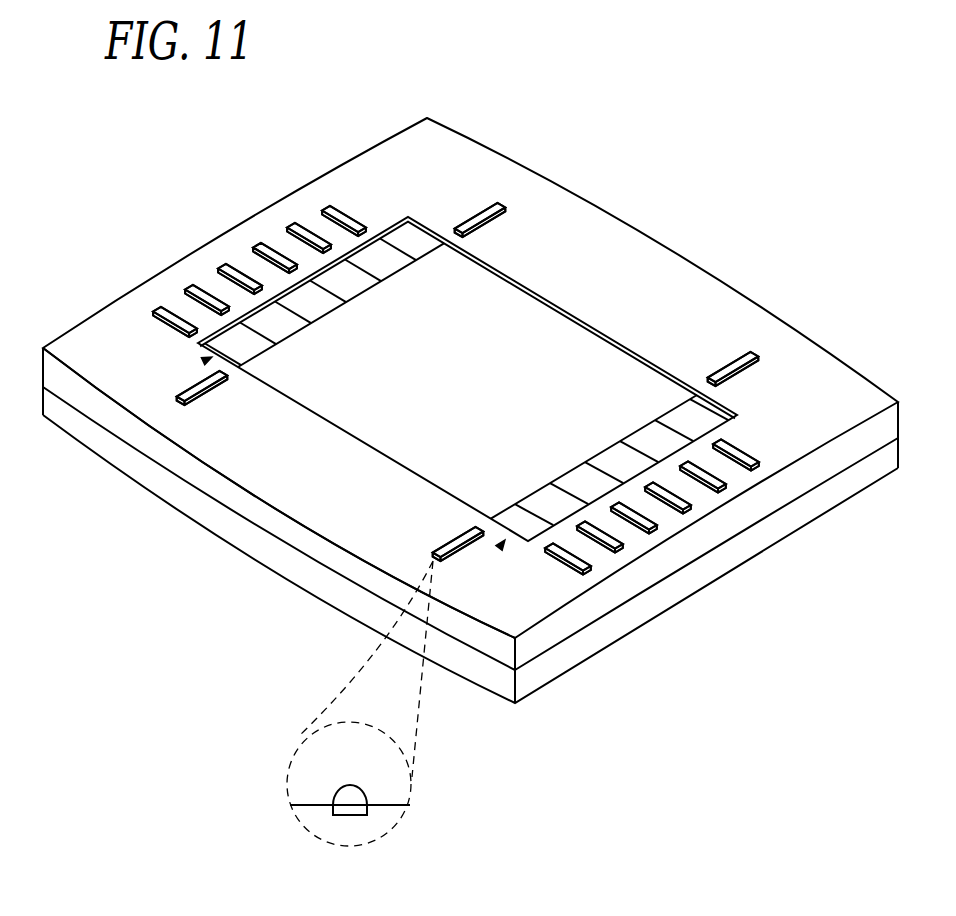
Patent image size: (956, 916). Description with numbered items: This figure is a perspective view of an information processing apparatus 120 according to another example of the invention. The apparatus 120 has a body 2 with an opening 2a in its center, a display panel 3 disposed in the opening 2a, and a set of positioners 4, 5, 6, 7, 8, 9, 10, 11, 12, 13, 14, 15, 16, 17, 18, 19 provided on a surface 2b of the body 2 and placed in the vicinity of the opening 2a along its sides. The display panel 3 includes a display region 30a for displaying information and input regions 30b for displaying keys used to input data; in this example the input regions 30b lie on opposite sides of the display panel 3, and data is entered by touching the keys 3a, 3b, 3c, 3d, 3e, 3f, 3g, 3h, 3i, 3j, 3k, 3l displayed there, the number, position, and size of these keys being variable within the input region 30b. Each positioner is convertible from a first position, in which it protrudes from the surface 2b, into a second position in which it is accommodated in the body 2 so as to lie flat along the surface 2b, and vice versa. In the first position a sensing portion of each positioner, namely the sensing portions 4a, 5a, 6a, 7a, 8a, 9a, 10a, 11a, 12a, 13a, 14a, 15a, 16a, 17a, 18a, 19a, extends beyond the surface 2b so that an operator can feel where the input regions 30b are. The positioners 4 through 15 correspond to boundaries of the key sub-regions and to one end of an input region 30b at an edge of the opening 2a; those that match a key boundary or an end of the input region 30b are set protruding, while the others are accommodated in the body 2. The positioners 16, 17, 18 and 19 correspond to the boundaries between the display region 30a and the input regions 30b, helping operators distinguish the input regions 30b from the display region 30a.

The body 2 is at (668, 260).
The opening 2a is at (543, 323).
The surface 2b is at (717, 297).
The display panel 3 is at (587, 323).
The key 3a is at (686, 403).
The key 3b is at (652, 425).
The key 3c is at (618, 444).
The key 3d is at (585, 466).
The key 3e is at (550, 486).
The key 3f is at (518, 508).
The key 3g is at (422, 250).
The key 3h is at (388, 270).
The key 3i is at (357, 297).
The key 3j is at (330, 313).
The key 3k is at (295, 332).
The key 3l is at (250, 353).
The positioner 4 is at (760, 465).
The sensing portion 4a is at (743, 452).
The positioner 5 is at (725, 489).
The sensing portion 5a is at (707, 489).
The positioner 6 is at (690, 510).
The sensing portion 6a is at (672, 510).
The positioner 7 is at (656, 530).
The sensing portion 7a is at (638, 530).
The positioner 8 is at (622, 550).
The sensing portion 8a is at (604, 549).
The positioner 9 is at (586, 572).
The sensing portion 9a is at (563, 567).
The positioner 10 is at (327, 206).
The sensing portion 10a is at (356, 219).
The positioner 11 is at (294, 221).
The sensing portion 11a is at (311, 230).
The positioner 12 is at (258, 242).
The sensing portion 12a is at (277, 243).
The positioner 13 is at (223, 264).
The sensing portion 13a is at (243, 272).
The positioner 14 is at (191, 285).
The sensing portion 14a is at (210, 293).
The positioner 15 is at (160, 307).
The sensing portion 15a is at (168, 327).
The positioner 16 is at (760, 352).
The sensing portion 16a is at (728, 365).
The positioner 17 is at (506, 201).
The sensing portion 17a is at (490, 219).
The positioner 18 is at (432, 553).
The sensing portion 18a is at (458, 536).
The positioner 19 is at (175, 402).
The sensing portion 19a is at (208, 392).
The display region 30a is at (357, 423).
The input region 30b is at (210, 359).
The information processing apparatus 120 is at (549, 150).